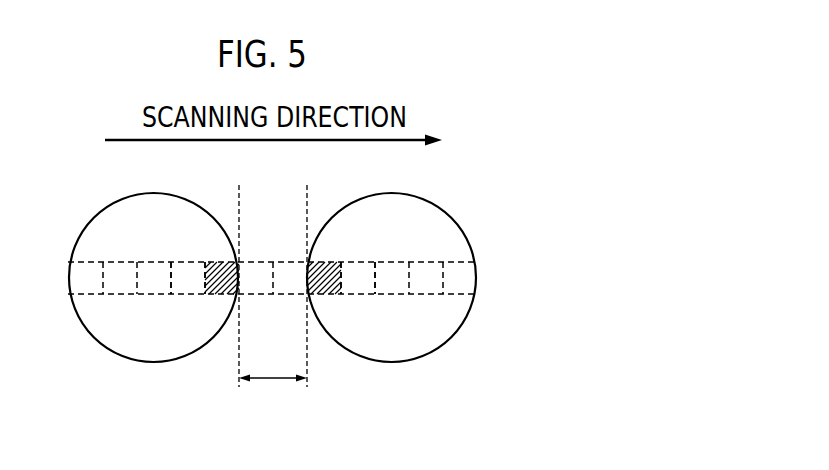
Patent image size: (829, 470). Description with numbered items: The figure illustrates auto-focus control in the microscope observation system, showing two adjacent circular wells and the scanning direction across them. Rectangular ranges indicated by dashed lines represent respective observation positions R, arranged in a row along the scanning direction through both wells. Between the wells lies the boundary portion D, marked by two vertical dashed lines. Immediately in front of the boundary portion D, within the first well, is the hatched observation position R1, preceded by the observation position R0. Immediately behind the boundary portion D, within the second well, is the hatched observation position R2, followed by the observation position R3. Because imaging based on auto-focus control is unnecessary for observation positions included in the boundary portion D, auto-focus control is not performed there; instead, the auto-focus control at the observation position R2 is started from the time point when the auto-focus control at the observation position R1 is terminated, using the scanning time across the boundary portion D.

The observation position R is at (455, 259).
The observation position R0 is at (188, 287).
The observation position R1 is at (213, 292).
The observation position R2 is at (330, 294).
The observation position R3 is at (358, 294).
The boundary portion D is at (273, 394).